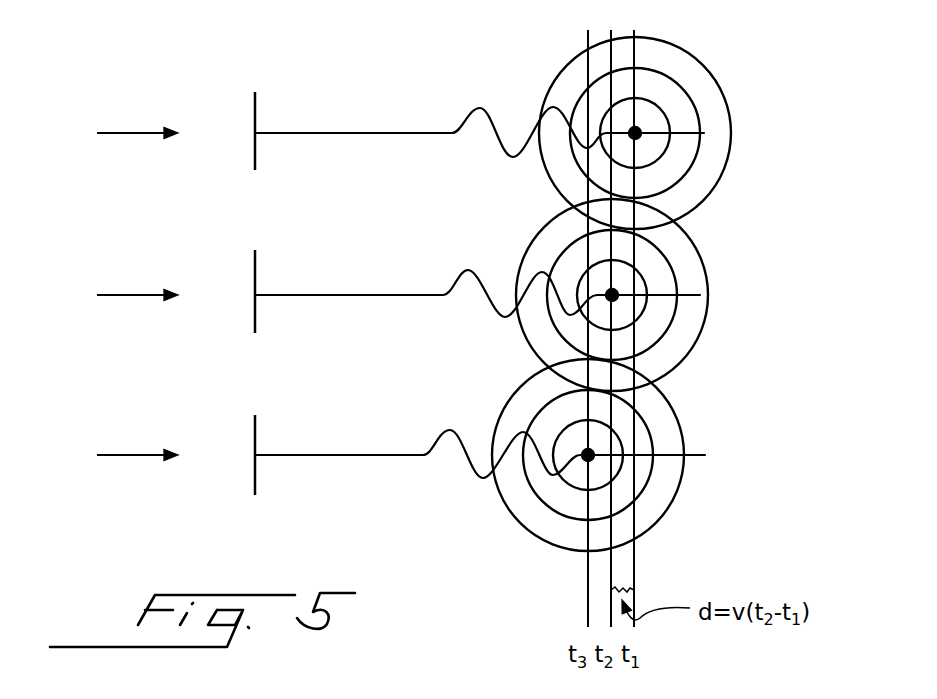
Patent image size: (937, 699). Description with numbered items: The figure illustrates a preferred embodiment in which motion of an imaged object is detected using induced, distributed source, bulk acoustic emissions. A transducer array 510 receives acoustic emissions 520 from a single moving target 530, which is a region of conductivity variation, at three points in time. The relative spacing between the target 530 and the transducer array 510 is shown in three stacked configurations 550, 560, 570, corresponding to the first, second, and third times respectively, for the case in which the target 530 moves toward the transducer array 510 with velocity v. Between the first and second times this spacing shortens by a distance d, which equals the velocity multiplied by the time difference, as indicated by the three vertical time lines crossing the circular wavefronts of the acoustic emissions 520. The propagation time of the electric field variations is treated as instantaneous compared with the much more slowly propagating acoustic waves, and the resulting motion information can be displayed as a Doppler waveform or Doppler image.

The transducer array 510 is at (247, 148).
The acoustic emissions 520 is at (568, 108).
The moving target 530 is at (597, 440).
The configuration 550 is at (107, 133).
The configuration 560 is at (104, 294).
The configuration 570 is at (104, 456).